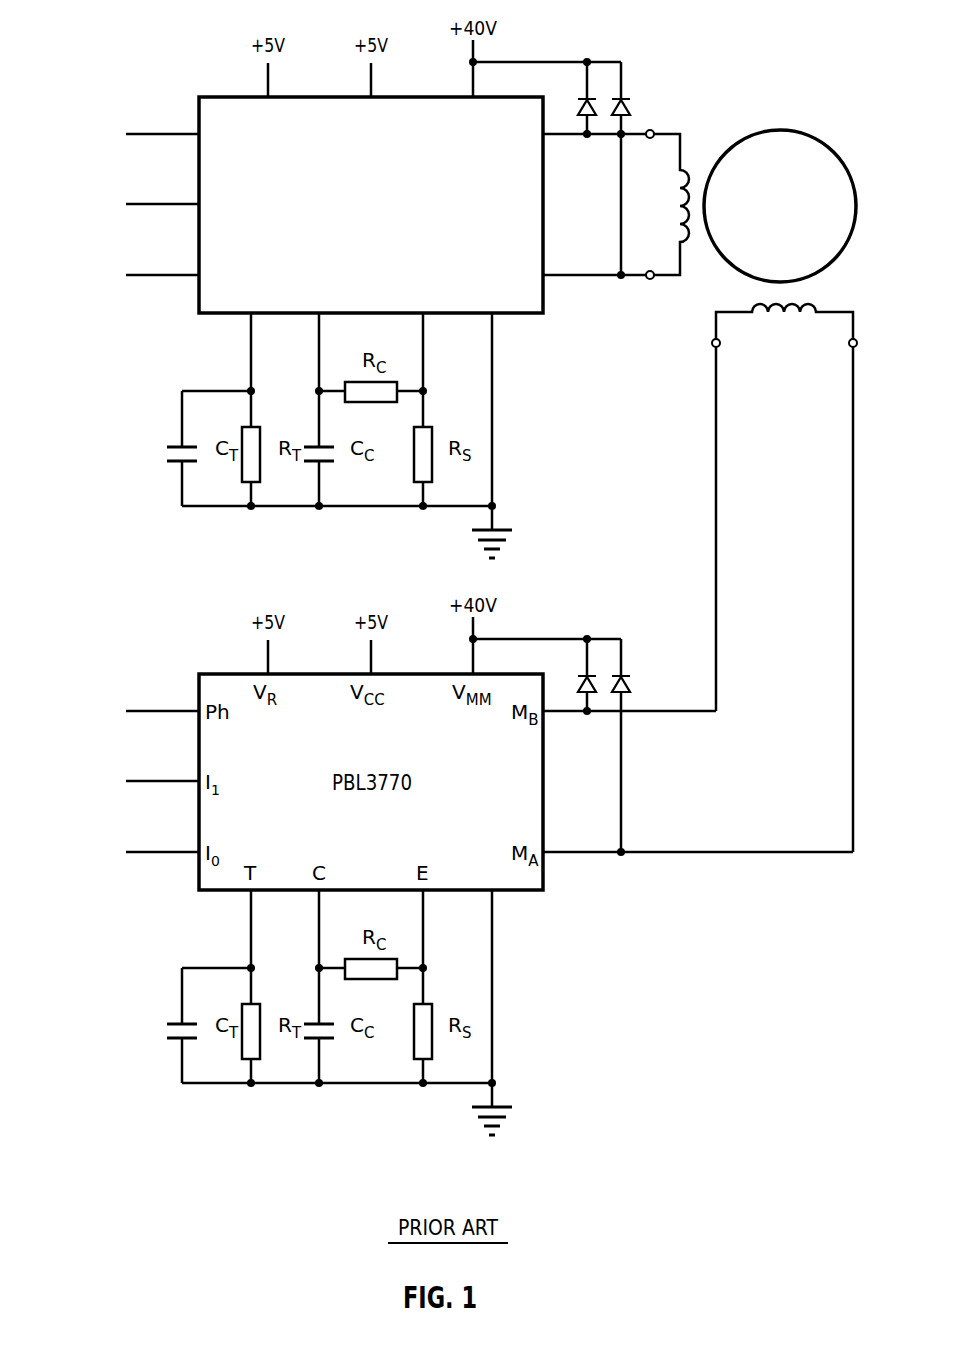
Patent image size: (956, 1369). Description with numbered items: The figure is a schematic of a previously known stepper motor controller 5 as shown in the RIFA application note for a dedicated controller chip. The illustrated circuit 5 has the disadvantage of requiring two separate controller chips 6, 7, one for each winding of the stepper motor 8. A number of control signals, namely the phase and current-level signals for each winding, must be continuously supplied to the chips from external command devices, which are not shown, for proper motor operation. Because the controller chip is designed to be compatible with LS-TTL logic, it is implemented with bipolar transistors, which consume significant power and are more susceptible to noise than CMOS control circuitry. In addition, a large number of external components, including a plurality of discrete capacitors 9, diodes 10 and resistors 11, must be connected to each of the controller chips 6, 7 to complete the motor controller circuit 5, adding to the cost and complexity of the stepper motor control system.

The stepper motor controller 5 is at (35, 554).
The controller chip 6 is at (64, 261).
The controller chip 7 is at (64, 838).
The stepper motor 8 is at (845, 123).
The capacitors 9 is at (176, 445).
The diodes 10 is at (623, 98).
The resistors 11 is at (240, 471).